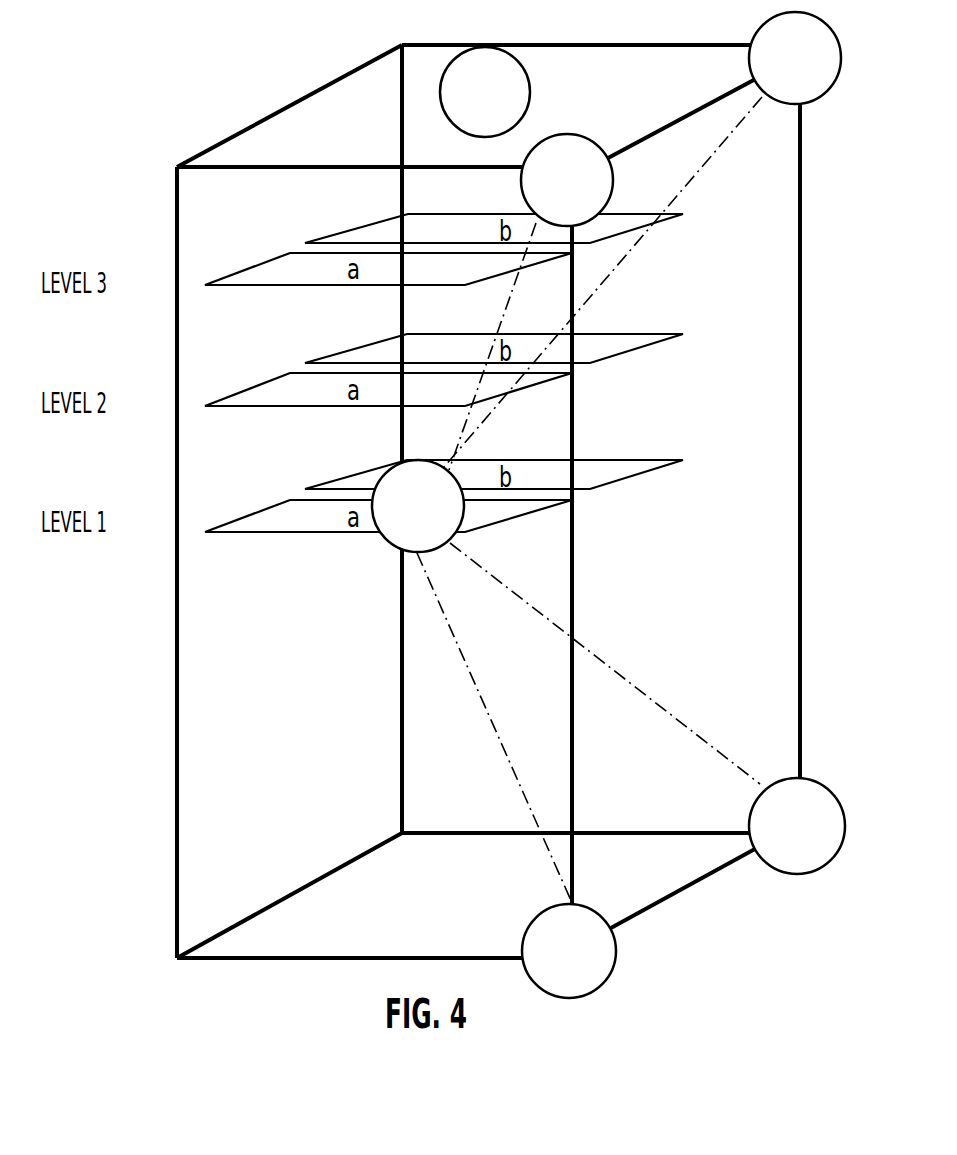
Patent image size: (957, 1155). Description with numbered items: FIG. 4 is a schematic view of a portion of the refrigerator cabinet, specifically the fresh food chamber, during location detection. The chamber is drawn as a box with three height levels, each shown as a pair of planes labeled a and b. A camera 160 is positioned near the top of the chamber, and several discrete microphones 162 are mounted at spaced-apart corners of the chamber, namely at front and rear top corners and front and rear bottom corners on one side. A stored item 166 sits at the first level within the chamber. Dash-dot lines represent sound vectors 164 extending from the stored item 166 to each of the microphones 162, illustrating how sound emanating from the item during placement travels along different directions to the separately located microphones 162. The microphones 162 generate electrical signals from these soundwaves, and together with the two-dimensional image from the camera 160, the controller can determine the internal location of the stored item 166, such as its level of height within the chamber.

The camera 160 is at (528, 77).
The microphone 162 is at (612, 163).
The sound vector 164 is at (516, 274).
The stored item 166 is at (388, 542).